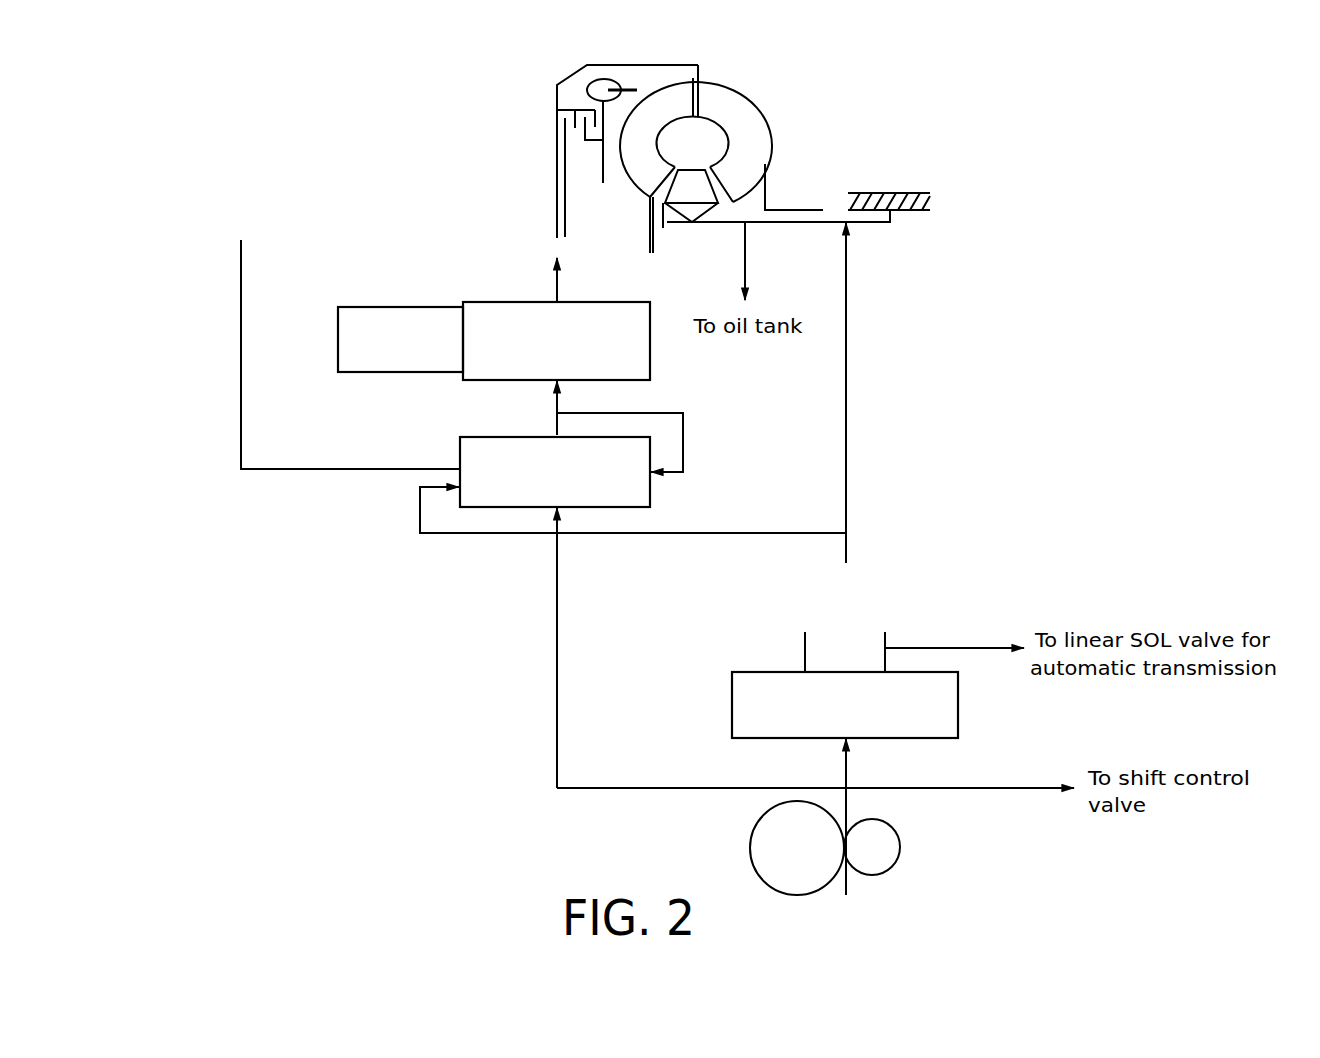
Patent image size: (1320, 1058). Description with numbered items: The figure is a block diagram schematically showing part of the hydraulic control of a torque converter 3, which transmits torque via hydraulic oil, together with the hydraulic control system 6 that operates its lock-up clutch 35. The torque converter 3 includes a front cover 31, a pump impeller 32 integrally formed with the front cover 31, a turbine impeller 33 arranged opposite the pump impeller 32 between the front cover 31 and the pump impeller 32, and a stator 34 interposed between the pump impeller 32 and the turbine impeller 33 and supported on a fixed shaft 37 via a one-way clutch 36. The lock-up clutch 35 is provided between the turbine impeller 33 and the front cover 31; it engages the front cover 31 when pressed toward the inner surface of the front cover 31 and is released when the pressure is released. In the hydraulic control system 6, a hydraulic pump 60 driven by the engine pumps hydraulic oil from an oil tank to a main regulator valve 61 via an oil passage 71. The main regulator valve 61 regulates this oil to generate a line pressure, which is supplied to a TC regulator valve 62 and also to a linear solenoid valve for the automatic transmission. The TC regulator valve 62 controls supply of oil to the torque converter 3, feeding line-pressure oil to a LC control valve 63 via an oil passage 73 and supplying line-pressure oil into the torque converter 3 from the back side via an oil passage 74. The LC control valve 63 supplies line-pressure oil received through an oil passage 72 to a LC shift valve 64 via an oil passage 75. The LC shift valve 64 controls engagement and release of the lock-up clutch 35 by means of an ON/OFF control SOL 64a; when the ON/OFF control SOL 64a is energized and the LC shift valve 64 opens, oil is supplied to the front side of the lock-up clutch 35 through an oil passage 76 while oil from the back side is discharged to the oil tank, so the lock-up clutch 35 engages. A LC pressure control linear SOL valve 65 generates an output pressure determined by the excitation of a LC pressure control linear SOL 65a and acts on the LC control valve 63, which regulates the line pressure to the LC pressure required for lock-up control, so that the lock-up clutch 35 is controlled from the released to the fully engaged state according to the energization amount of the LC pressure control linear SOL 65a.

The torque converter 3 is at (698, 160).
The hydraulic control system 6 is at (1056, 264).
The front cover 31 is at (567, 78).
The pump impeller 32 is at (727, 73).
The turbine impeller 33 is at (632, 195).
The stator 34 is at (662, 230).
The lock-up clutch 35 is at (547, 100).
The one-way clutch 36 is at (720, 225).
The fixed shaft 37 is at (825, 223).
The hydraulic pump 60 is at (906, 844).
The main regulator valve 61 is at (732, 702).
The TC regulator valve 62 is at (935, 567).
The LC control valve 63 is at (460, 440).
The LC shift valve 64 is at (470, 302).
The ON/OFF control SOL 64a is at (372, 305).
The LC pressure control linear SOL valve 65 is at (240, 142).
The LC pressure control linear SOL 65a is at (372, 154).
The oil passage 71 is at (848, 770).
The oil passage 72 is at (558, 645).
The oil passage 73 is at (725, 535).
The oil passage 74 is at (848, 340).
The oil passage 75 is at (555, 400).
The oil passage 76 is at (556, 290).